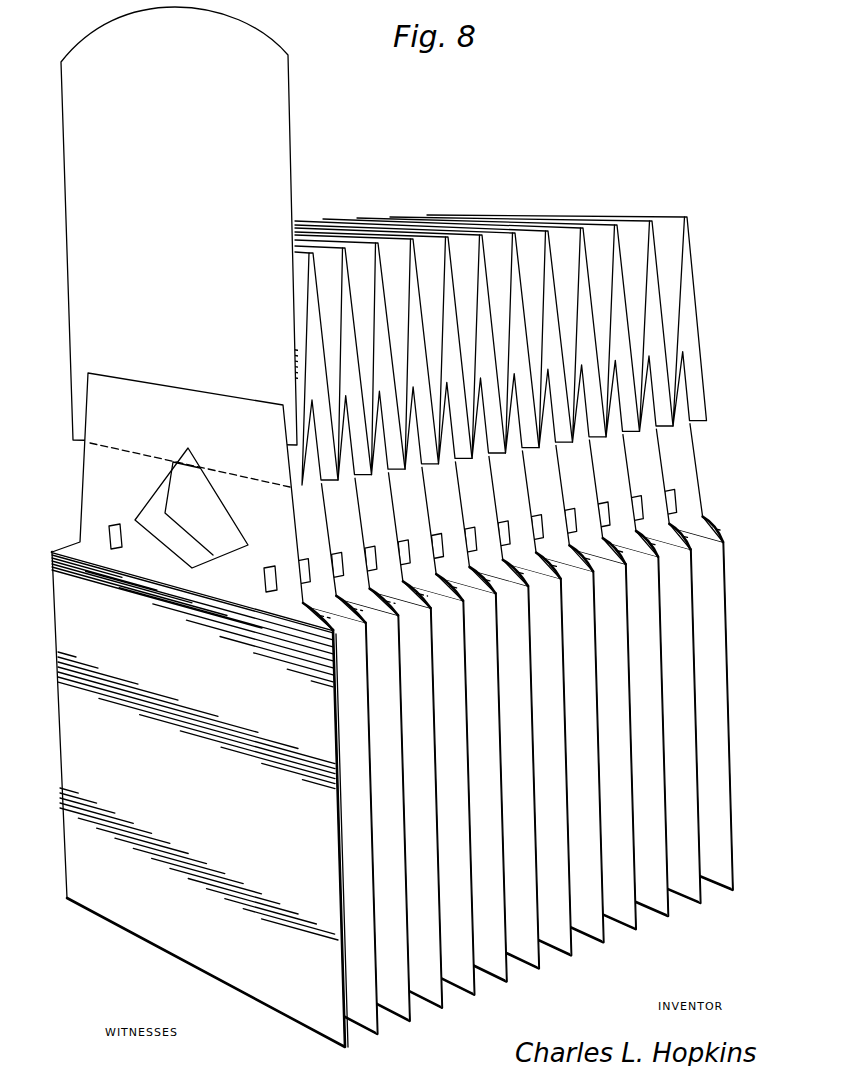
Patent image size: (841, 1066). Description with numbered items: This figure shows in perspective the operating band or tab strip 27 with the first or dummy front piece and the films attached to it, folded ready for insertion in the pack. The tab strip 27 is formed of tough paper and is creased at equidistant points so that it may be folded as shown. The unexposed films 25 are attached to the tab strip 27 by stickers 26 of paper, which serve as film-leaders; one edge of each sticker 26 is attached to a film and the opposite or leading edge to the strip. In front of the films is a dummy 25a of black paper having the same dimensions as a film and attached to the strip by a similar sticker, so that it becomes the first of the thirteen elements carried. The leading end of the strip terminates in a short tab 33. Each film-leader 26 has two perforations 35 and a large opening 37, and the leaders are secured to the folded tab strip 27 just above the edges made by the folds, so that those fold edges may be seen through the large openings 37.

The unexposed films 25 is at (595, 922).
The dummy 25a is at (200, 710).
The sticker 26 is at (688, 478).
The operating band or tab strip 27 is at (594, 250).
The tab 33 is at (179, 226).
The perforations 35 is at (108, 531).
The large opening 37 is at (187, 488).